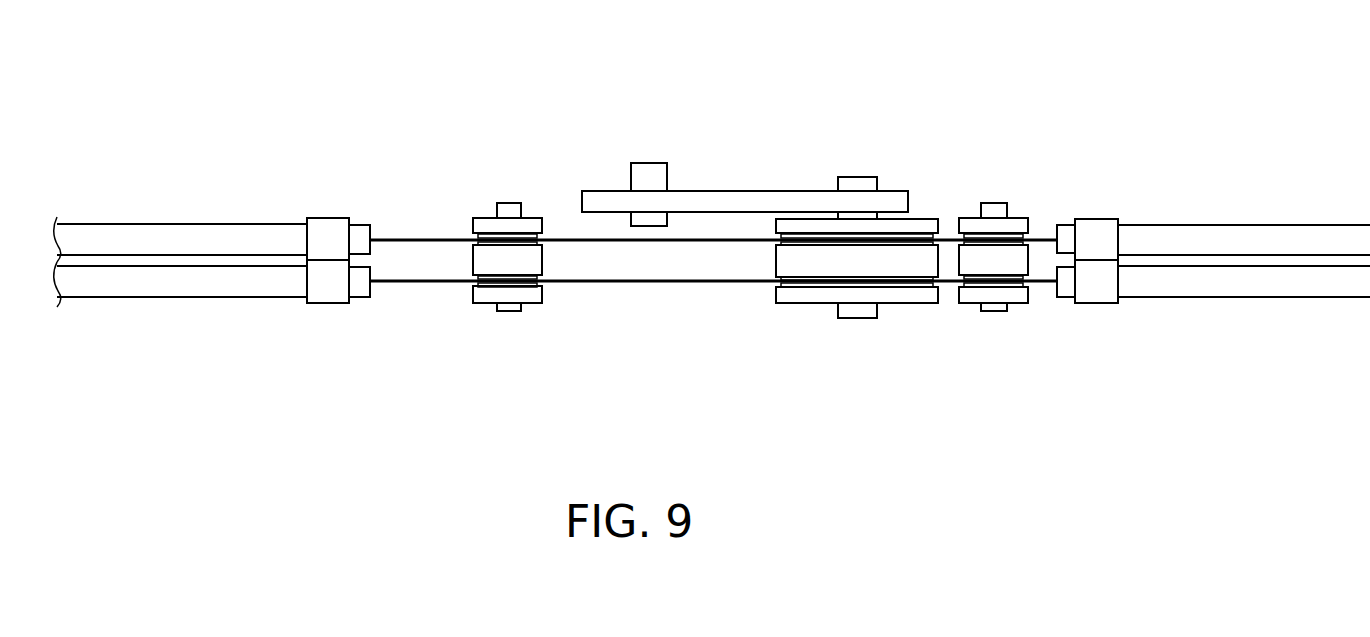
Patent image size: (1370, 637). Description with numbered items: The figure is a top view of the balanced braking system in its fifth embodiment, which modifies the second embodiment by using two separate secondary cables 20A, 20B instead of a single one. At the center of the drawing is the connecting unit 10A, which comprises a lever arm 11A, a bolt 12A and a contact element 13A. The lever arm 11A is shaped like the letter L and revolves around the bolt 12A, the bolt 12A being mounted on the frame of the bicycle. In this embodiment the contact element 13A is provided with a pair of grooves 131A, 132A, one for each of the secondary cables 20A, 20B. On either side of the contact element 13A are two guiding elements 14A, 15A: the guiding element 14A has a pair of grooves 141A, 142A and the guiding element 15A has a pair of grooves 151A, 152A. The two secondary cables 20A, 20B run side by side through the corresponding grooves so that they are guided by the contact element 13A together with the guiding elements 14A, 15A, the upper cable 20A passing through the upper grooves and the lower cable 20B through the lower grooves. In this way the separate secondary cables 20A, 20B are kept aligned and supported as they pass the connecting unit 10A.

The connecting unit 10A is at (770, 221).
The lever arm 11A is at (713, 197).
The bolt 12A is at (642, 167).
The contact element 13A is at (877, 260).
The groove 131A is at (917, 227).
The groove 132A is at (898, 284).
The guiding element 14A is at (544, 228).
The groove 141A is at (528, 218).
The groove 142A is at (528, 285).
The guiding element 15A is at (1032, 255).
The groove 151A is at (997, 227).
The groove 152A is at (1000, 285).
The secondary cable 20A is at (428, 238).
The secondary cable 20B is at (413, 283).